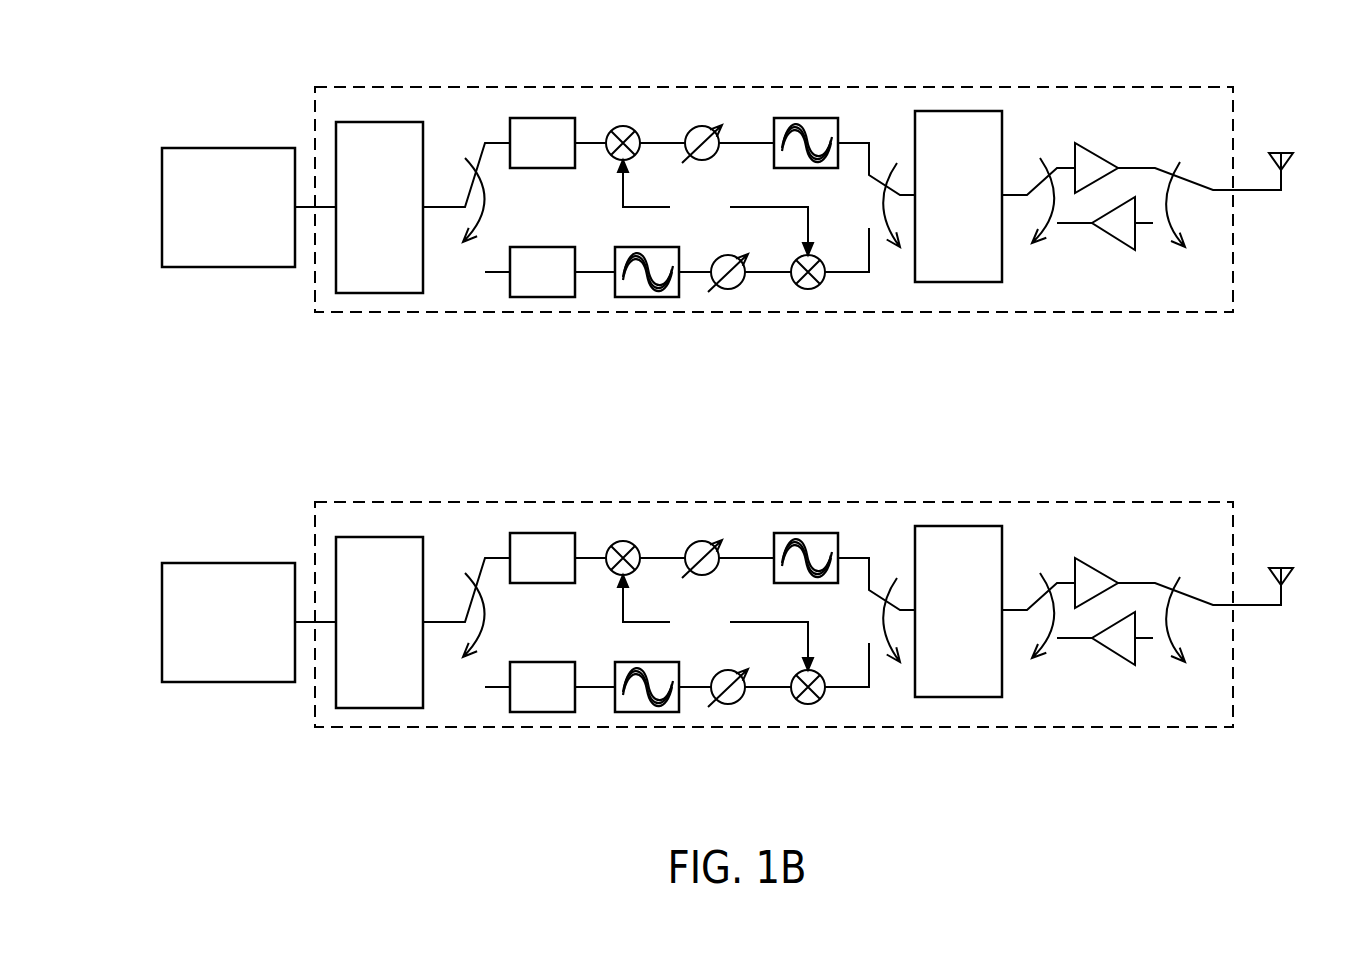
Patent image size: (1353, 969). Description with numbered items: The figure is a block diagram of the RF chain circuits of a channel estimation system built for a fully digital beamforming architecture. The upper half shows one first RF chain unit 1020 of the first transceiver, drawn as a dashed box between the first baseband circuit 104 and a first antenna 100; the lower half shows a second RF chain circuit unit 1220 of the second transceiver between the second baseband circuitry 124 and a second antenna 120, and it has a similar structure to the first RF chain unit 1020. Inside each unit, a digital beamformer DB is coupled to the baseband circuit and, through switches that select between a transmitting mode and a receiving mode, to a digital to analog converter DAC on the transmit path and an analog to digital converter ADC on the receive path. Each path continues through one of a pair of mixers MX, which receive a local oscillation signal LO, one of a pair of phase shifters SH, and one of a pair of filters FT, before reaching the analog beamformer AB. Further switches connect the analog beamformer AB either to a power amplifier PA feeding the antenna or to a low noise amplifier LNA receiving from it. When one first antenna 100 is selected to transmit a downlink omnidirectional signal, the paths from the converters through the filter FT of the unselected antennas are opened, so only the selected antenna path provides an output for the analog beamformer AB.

The first baseband circuit 104 is at (227, 148).
The second baseband circuitry 124 is at (227, 563).
The first RF chain unit 1020 is at (388, 87).
The second RF chain circuit unit 1220 is at (388, 502).
The first antenna 100 is at (1281, 153).
The second antenna 120 is at (1281, 568).
The digital beamformer DB is at (378, 293).
The digital to analog converter DAC is at (542, 350).
The analog to digital converter ADC is at (542, 479).
The mixer MX is at (623, 126).
The phase shifter SH is at (704, 126).
The filter FT is at (807, 118).
The local oscillation signal LO is at (715, 415).
The analog beamformer AB is at (958, 282).
The power amplifier PA is at (1090, 143).
The low noise amplifier LNA is at (1113, 238).